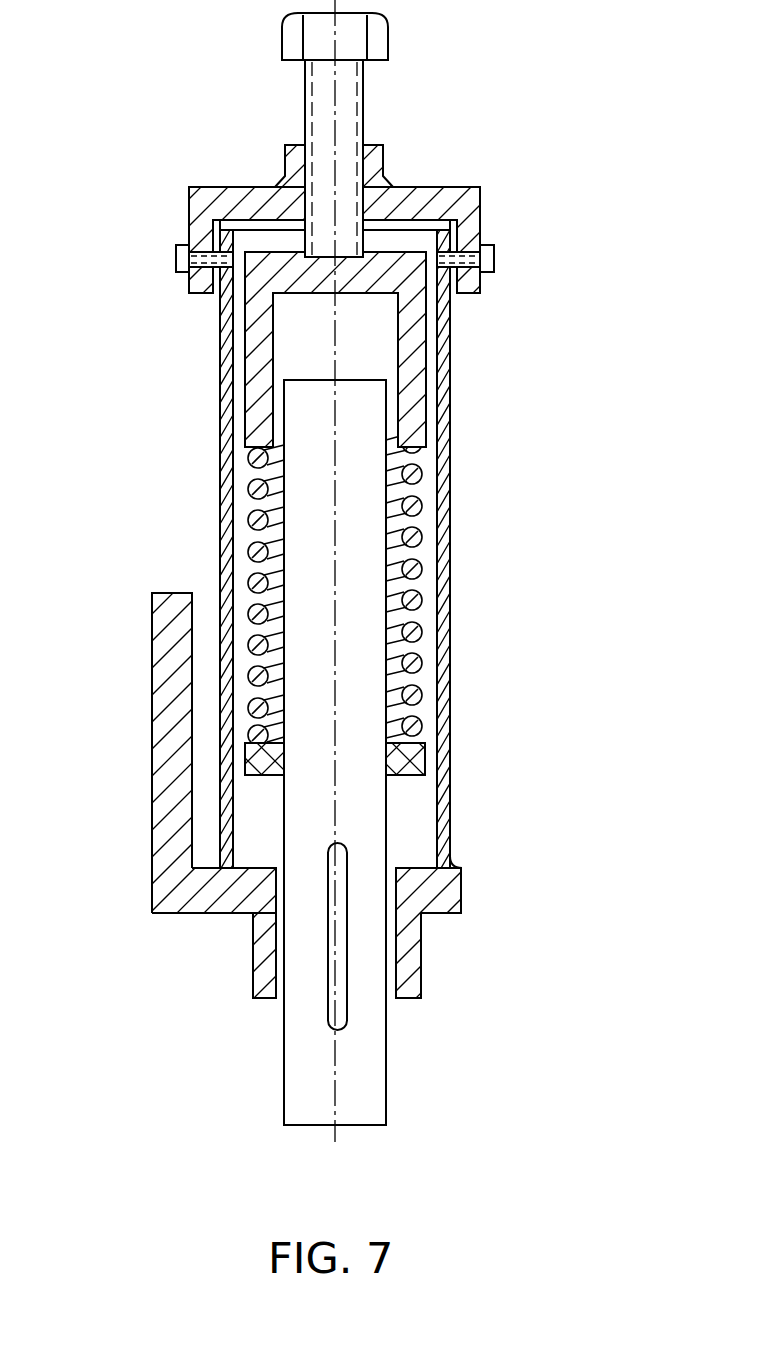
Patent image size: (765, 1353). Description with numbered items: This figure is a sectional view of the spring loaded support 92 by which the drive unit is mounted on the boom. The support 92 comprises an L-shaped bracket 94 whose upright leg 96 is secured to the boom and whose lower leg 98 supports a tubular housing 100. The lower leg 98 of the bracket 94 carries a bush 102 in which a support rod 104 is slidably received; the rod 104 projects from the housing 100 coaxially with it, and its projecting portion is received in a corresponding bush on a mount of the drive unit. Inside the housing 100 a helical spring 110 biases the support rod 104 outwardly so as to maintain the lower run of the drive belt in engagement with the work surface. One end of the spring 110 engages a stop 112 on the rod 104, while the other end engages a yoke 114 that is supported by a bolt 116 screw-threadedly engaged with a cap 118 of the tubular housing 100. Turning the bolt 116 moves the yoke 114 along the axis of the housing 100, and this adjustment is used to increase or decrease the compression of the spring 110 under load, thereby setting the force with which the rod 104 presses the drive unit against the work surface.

The spring loaded support 92 is at (505, 620).
The L-shaped bracket 94 is at (152, 795).
The upright leg 96 is at (185, 698).
The lower leg 98 is at (208, 898).
The tubular housing 100 is at (220, 372).
The bush 102 is at (393, 952).
The support rod 104 is at (375, 1078).
The helical spring 110 is at (413, 540).
The stop 112 is at (408, 763).
The yoke 114 is at (410, 340).
The bolt 116 is at (363, 87).
The cap 118 is at (235, 195).